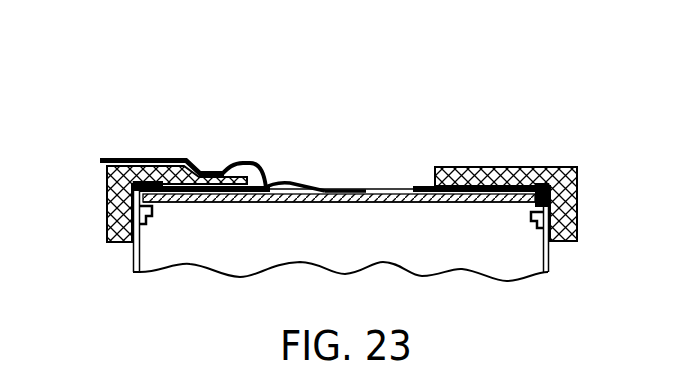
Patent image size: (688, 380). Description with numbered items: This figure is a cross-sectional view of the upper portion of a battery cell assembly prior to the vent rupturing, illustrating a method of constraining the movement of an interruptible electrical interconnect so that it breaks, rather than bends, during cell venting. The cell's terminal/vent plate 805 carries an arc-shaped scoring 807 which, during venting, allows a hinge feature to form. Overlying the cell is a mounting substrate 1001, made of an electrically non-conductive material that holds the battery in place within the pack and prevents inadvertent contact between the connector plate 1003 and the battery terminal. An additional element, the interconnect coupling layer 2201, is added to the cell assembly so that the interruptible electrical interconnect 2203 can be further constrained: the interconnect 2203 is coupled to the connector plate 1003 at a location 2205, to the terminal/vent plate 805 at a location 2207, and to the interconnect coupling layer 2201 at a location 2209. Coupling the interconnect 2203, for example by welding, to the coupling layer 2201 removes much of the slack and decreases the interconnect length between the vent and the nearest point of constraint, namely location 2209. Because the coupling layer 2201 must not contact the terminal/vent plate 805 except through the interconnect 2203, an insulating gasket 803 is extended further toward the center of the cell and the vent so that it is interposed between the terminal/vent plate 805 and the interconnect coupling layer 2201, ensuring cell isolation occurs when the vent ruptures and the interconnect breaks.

The mounting substrate 1001 is at (107, 169).
The connector plate 1003 is at (133, 158).
The insulating gasket 803 is at (181, 201).
The terminal/vent plate 805 is at (397, 203).
The scoring 807 is at (295, 215).
The interconnect coupling layer 2201 is at (424, 187).
The interruptible electrical interconnect 2203 is at (297, 180).
The location 2205 is at (222, 150).
The location 2207 is at (342, 176).
The location 2209 is at (270, 167).